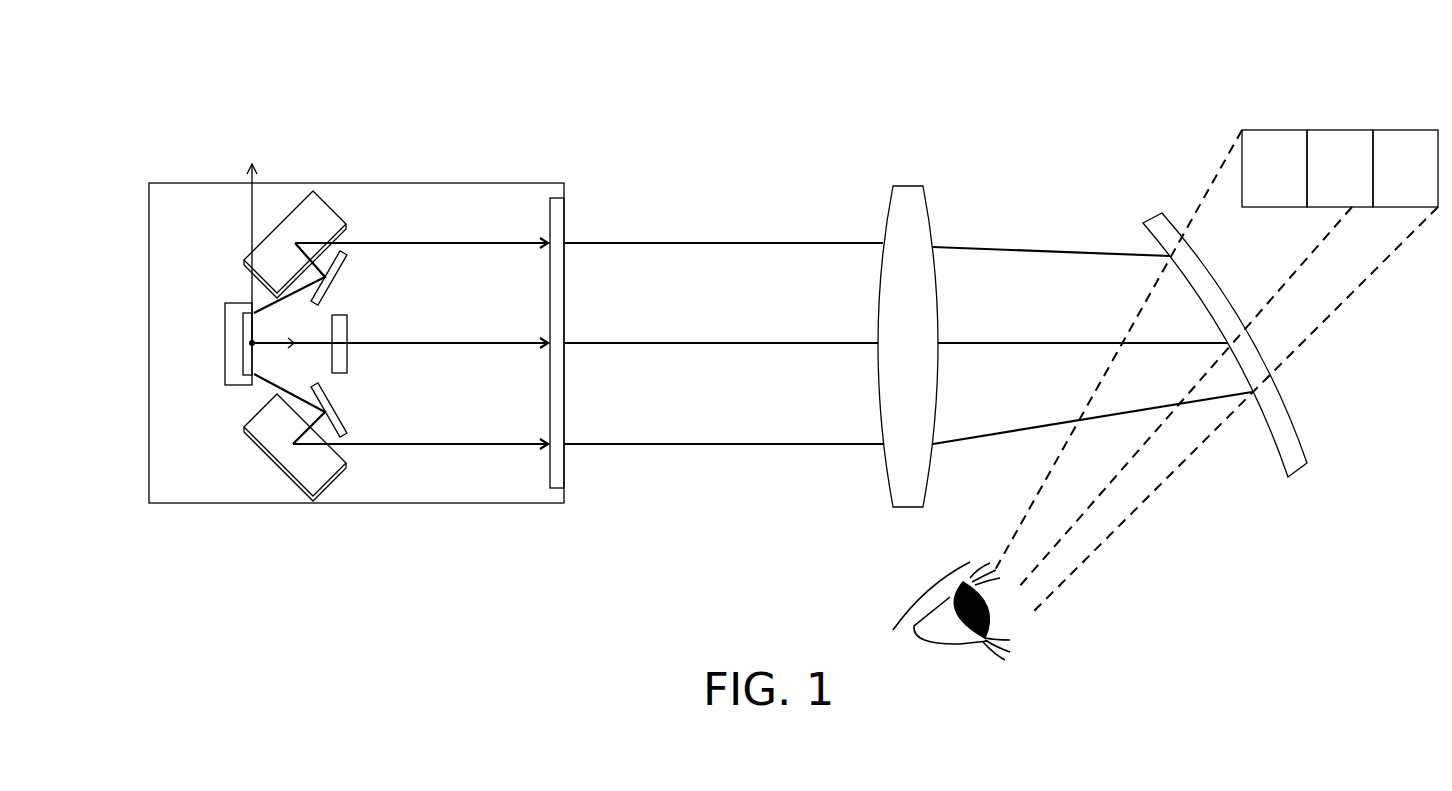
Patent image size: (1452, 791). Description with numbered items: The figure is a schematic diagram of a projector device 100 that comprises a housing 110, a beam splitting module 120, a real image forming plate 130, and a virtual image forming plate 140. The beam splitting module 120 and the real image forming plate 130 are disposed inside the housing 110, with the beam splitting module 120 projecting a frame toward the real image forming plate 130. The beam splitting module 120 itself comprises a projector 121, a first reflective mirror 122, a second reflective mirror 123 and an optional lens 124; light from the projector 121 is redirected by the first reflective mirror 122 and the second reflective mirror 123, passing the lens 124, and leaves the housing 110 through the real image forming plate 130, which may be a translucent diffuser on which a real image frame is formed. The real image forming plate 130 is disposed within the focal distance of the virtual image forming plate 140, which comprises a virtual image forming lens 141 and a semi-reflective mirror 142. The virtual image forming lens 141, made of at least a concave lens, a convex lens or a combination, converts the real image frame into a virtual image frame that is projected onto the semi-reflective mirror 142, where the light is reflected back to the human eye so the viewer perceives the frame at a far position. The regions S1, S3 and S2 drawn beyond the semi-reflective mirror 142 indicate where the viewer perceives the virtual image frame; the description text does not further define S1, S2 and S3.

The projector device 100 is at (767, 72).
The housing 110 is at (422, 183).
The beam splitting module 120 is at (218, 235).
The projector 121 is at (233, 342).
The first reflective mirror 122 is at (345, 252).
The second reflective mirror 123 is at (318, 468).
The lens 124 is at (340, 360).
The real image forming plate 130 is at (557, 218).
The virtual image forming plate 140 is at (993, 132).
The virtual image forming lens 141 is at (912, 205).
The semi-reflective mirror 142 is at (1158, 220).
The first image region S1 is at (1273, 130).
The second image region S2 is at (1405, 130).
The third image region S3 is at (1340, 130).